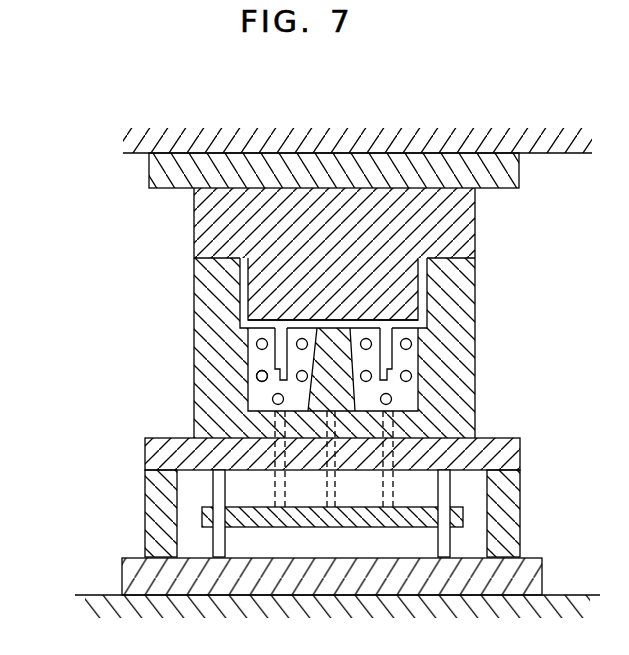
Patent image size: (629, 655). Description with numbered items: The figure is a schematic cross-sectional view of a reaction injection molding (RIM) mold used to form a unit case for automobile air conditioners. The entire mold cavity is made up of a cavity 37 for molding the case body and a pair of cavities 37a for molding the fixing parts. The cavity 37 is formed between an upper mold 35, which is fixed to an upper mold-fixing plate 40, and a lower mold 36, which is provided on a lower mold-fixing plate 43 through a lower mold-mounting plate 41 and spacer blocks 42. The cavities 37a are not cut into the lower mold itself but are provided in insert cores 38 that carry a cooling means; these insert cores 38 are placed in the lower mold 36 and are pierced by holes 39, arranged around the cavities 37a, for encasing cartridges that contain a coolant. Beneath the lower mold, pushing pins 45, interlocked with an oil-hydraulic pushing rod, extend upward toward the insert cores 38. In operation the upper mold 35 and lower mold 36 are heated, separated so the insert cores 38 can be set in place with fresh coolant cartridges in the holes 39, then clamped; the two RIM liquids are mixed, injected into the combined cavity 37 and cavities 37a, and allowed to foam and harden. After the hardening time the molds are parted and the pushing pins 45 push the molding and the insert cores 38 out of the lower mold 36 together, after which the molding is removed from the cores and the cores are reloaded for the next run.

The upper mold 35 is at (457, 218).
The lower mold 36 is at (460, 361).
The cavity 37 is at (245, 288).
The cavity for molding the fixing parts 37a is at (278, 381).
The insert core 38 is at (258, 362).
The hole for encasing cartridges 39 is at (256, 377).
The upper mold-fixing plate 40 is at (402, 163).
The lower mold-mounting plate 41 is at (507, 452).
The spacer block 42 is at (508, 517).
The lower mold-fixing plate 43 is at (528, 573).
The pushing pin 45 is at (278, 498).